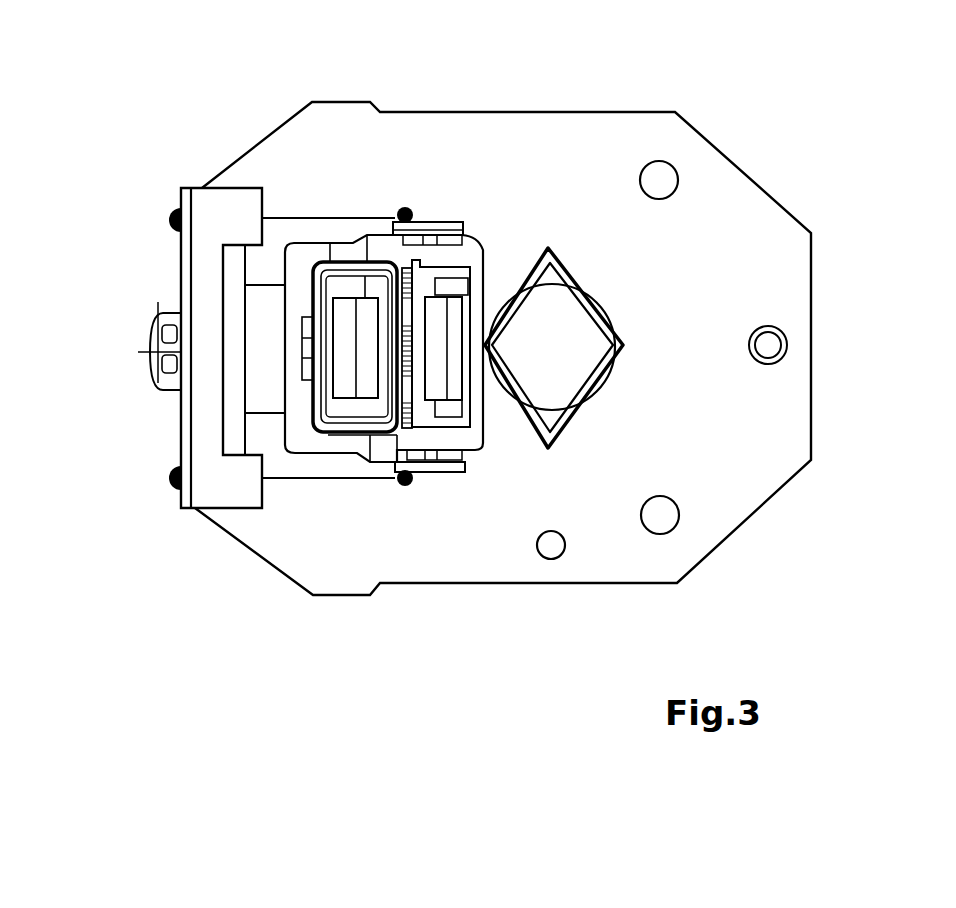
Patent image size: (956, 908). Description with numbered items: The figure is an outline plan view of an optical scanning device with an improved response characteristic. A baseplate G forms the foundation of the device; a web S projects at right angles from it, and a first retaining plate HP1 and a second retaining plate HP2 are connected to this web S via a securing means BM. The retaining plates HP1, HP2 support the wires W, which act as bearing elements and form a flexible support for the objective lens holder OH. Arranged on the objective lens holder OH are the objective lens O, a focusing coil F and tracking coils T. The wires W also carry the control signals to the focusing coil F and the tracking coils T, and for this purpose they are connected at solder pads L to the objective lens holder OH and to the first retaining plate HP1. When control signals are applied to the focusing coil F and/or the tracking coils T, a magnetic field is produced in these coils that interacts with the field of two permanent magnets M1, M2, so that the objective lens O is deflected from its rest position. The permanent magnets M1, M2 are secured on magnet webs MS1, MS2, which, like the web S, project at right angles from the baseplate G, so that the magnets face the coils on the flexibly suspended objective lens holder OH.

The first retaining plate HP1 is at (184, 187).
The second retaining plate HP2 is at (222, 168).
The wires W is at (322, 214).
The permanent magnet M2 is at (437, 303).
The magnet web MS2 is at (457, 307).
The objective lens O is at (590, 313).
The solder pads L is at (168, 216).
The web S is at (232, 290).
The tracking coils T is at (412, 333).
The securing means BM is at (170, 382).
The focusing coil F is at (316, 437).
The baseplate G is at (727, 495).
The magnet web MS1 is at (347, 390).
The permanent magnet M1 is at (372, 390).
The objective lens holder OH is at (505, 440).